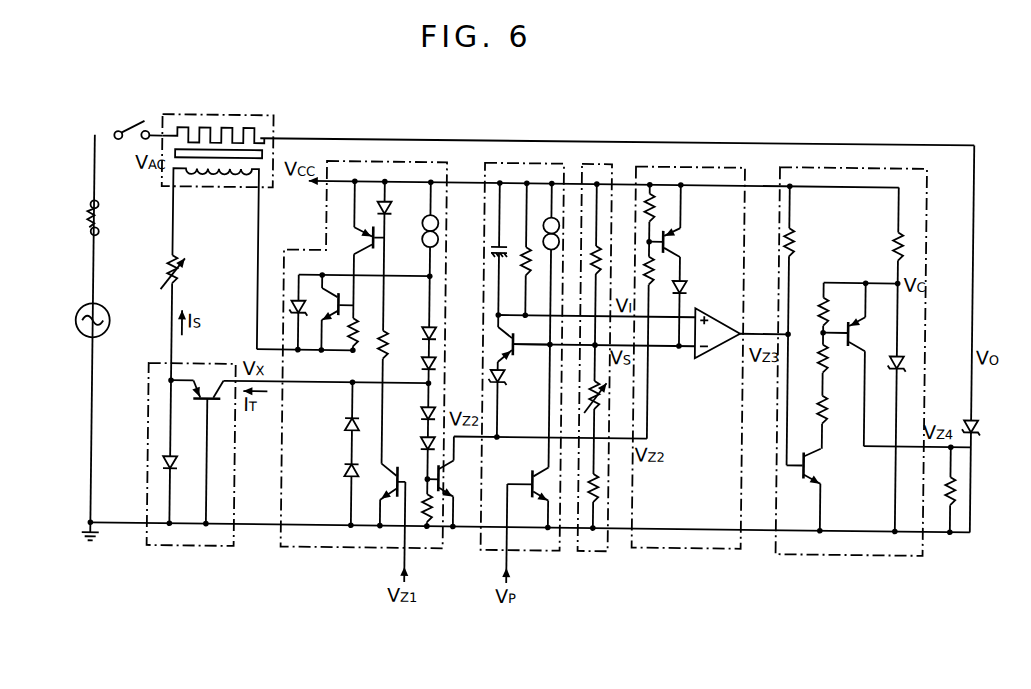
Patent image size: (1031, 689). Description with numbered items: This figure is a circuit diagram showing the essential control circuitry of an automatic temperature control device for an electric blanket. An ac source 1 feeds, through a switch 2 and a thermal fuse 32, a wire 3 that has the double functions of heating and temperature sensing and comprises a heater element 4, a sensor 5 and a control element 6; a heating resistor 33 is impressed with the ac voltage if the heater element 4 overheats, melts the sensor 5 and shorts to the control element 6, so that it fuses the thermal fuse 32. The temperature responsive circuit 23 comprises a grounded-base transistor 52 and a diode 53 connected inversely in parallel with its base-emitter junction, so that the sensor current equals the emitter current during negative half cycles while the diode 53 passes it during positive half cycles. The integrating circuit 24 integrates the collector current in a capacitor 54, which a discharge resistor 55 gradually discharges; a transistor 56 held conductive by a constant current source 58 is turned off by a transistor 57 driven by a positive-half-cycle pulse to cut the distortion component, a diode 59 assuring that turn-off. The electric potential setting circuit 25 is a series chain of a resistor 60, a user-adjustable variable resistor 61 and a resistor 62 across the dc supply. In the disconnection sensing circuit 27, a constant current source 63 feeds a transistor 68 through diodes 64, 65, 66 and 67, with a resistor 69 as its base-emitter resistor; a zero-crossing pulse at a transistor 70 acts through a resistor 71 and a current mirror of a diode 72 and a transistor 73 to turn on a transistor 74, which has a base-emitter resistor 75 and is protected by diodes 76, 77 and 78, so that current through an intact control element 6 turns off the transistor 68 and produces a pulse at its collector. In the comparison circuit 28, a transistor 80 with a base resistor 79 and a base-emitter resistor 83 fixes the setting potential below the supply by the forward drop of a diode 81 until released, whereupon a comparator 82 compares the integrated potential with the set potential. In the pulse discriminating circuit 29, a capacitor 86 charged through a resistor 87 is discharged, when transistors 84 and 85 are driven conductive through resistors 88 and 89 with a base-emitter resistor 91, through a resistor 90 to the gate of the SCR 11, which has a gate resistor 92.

The ac source 1 is at (75, 326).
The switch 2 is at (118, 132).
The wire 3 is at (217, 116).
The heater element 4 is at (256, 132).
The sensor 5 is at (263, 157).
The control element 6 is at (216, 181).
The SCR 11 is at (979, 422).
The temperature responsive circuit 23 is at (207, 551).
The integrating circuit 24 is at (550, 553).
The electric potential setting circuit 25 is at (582, 552).
The disconnection sensing circuit 27 is at (333, 553).
The comparison circuit 28 is at (680, 548).
The pulse discriminating circuit 29 is at (828, 555).
The thermal fuse 32 is at (89, 212).
The heating resistor 33 is at (184, 272).
The transistor 52 is at (203, 403).
The diode 53 is at (176, 468).
The capacitor 54 is at (490, 242).
The discharge resistor 55 is at (522, 262).
The transistor 56 is at (505, 361).
The transistor 57 is at (531, 474).
The constant current source 58 is at (553, 218).
The diode 59 is at (500, 386).
The resistor 60 is at (598, 236).
The variable resistor 61 is at (603, 392).
The resistor 62 is at (600, 490).
The constant current source 63 is at (421, 242).
The diode 64 is at (424, 330).
The diode 65 is at (422, 368).
The diode 66 is at (422, 413).
The diode 67 is at (422, 444).
The transistor 68 is at (457, 472).
The resistor 69 is at (433, 526).
The transistor 70 is at (393, 479).
The resistor 71 is at (387, 345).
The diode 72 is at (390, 209).
The transistor 73 is at (366, 241).
The transistor 74 is at (336, 290).
The resistor 75 is at (357, 323).
The diode 76 is at (299, 300).
The diode 77 is at (347, 427).
The diode 78 is at (346, 473).
The resistor 79 is at (660, 272).
The transistor 80 is at (675, 241).
The diode 81 is at (688, 289).
The comparator 82 is at (715, 356).
The resistor 83 is at (653, 214).
The transistor 84 is at (812, 464).
The transistor 85 is at (856, 333).
The capacitor 86 is at (905, 368).
The resistor 87 is at (890, 243).
The resistor 88 is at (795, 238).
The resistor 89 is at (828, 360).
The resistor 90 is at (838, 402).
The resistor 91 is at (817, 309).
The gate resistor 92 is at (958, 489).